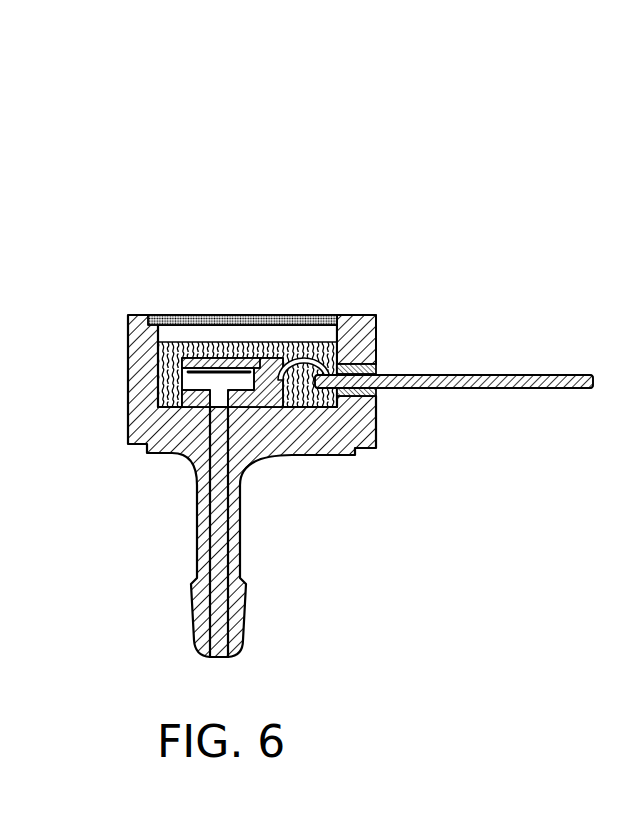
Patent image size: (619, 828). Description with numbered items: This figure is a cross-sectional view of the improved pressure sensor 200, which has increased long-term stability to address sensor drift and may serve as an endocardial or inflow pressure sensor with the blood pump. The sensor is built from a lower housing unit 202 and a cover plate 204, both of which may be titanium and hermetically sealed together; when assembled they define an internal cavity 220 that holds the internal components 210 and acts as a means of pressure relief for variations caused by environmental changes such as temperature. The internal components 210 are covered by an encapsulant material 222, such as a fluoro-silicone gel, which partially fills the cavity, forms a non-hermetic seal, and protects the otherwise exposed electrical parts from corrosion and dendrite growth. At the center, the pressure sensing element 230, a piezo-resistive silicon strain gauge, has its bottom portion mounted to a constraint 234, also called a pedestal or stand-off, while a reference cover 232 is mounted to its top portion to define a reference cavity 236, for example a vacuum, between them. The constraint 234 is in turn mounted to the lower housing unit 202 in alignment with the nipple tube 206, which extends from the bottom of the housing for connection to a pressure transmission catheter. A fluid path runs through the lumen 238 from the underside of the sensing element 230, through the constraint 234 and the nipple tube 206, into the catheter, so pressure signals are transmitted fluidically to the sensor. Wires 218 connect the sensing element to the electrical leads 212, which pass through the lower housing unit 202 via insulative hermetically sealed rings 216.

The pressure sensor 200 is at (336, 340).
The lower housing unit 202 is at (377, 423).
The cover plate 204 is at (333, 318).
The nipple tube 206 is at (282, 585).
The internal components 210 is at (200, 307).
The electrical leads 212 is at (558, 400).
The insulative hermetically sealed rings 216 is at (378, 368).
The wires 218 is at (302, 333).
The internal cavity 220 is at (176, 362).
The encapsulant material 222 is at (165, 333).
The pressure sensing element 230 is at (282, 372).
The reference cover 232 is at (235, 355).
The constraint 234 is at (298, 395).
The reference cavity 236 is at (247, 372).
The lumen 238 is at (217, 510).